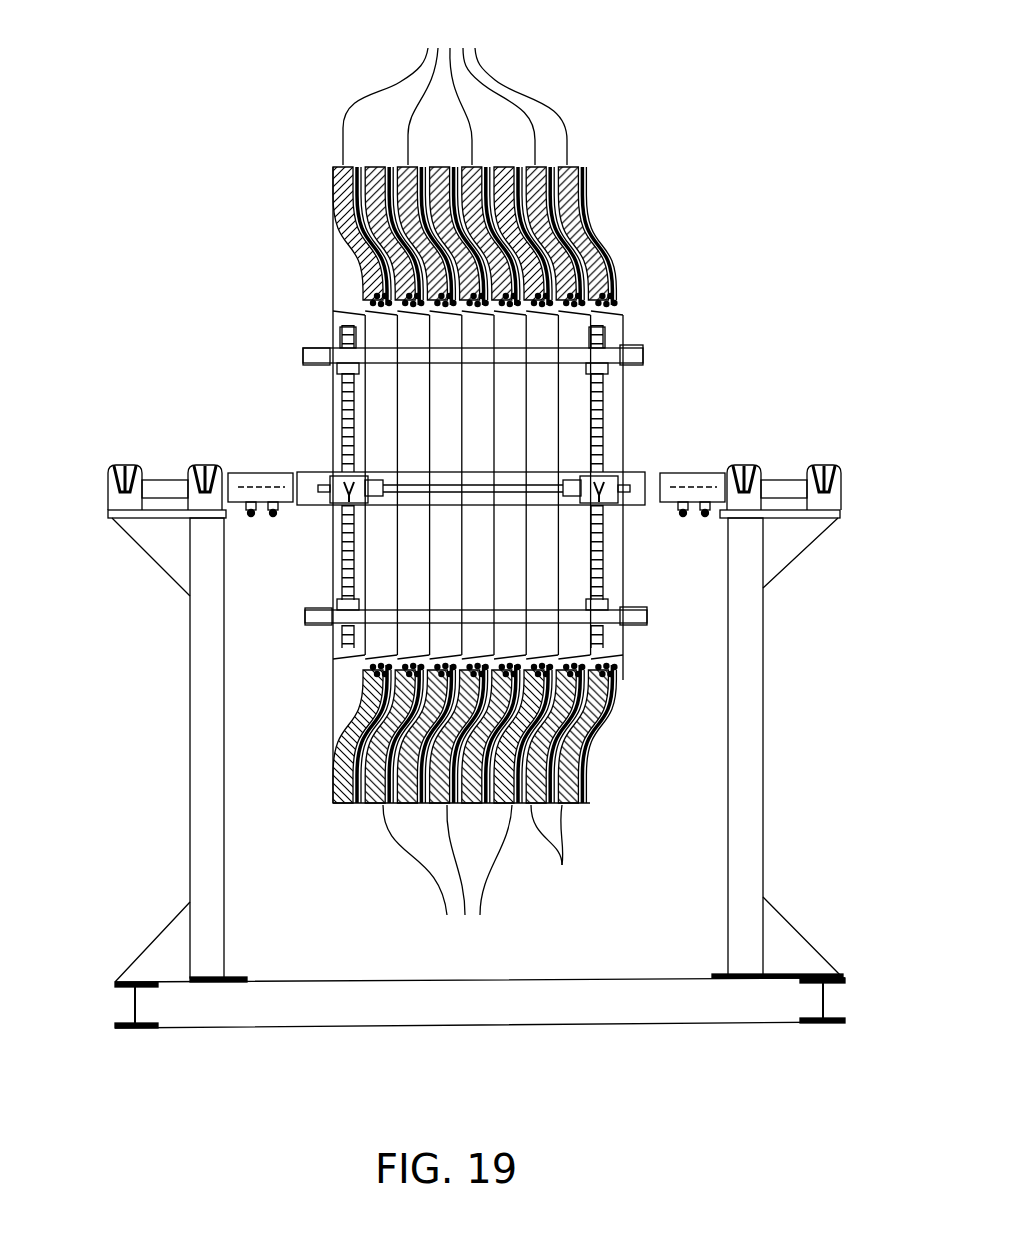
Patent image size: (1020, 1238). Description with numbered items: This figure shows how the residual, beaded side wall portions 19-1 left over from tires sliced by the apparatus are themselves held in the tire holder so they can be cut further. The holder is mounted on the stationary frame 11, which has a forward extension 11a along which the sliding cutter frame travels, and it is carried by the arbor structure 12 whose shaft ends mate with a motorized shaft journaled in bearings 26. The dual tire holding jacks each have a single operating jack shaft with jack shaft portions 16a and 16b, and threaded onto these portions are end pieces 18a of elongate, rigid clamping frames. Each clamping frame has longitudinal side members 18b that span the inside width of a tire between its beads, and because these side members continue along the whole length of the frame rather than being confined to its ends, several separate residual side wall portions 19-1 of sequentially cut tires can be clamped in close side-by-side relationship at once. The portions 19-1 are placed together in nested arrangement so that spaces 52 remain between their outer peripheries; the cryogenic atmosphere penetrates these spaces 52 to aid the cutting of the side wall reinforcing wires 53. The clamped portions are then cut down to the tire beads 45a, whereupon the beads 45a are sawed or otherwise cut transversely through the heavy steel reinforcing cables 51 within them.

The stationary frame 11 is at (764, 750).
The forward extension of stationary frame 11a is at (300, 995).
The arbor structure 12 is at (280, 472).
The jack shaft portion 16a is at (340, 417).
The jack shaft portion 16b is at (340, 540).
The end piece of clamping frame 18a is at (305, 357).
The longitudinal side member 18b is at (330, 350).
The residual side wall portion 19-1 is at (455, 480).
The bearing 26 is at (205, 465).
The tire bead 45a is at (625, 313).
The steel reinforcing cable 51 is at (392, 662).
The space 52 is at (555, 852).
The side wall reinforcing wire 53 is at (583, 207).